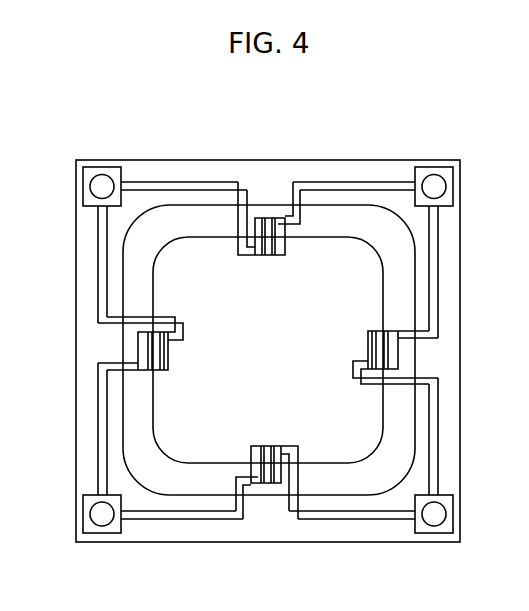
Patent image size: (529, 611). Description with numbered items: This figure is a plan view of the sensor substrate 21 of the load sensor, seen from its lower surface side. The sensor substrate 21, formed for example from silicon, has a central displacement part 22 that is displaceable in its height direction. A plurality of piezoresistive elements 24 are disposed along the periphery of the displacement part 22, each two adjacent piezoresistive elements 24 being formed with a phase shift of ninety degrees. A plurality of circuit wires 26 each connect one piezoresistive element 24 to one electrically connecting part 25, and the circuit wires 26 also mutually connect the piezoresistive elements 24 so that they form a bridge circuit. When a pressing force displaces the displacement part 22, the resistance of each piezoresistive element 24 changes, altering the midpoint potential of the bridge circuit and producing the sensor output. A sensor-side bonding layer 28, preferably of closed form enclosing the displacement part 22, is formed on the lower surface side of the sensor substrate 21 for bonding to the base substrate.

The sensor substrate 21 is at (303, 167).
The displacement part 22 is at (325, 272).
The piezoresistive element 24 is at (267, 183).
The electrically connecting part 25 is at (92, 172).
The circuit wire 26 is at (162, 187).
The sensor-side bonding layer 28 is at (210, 223).